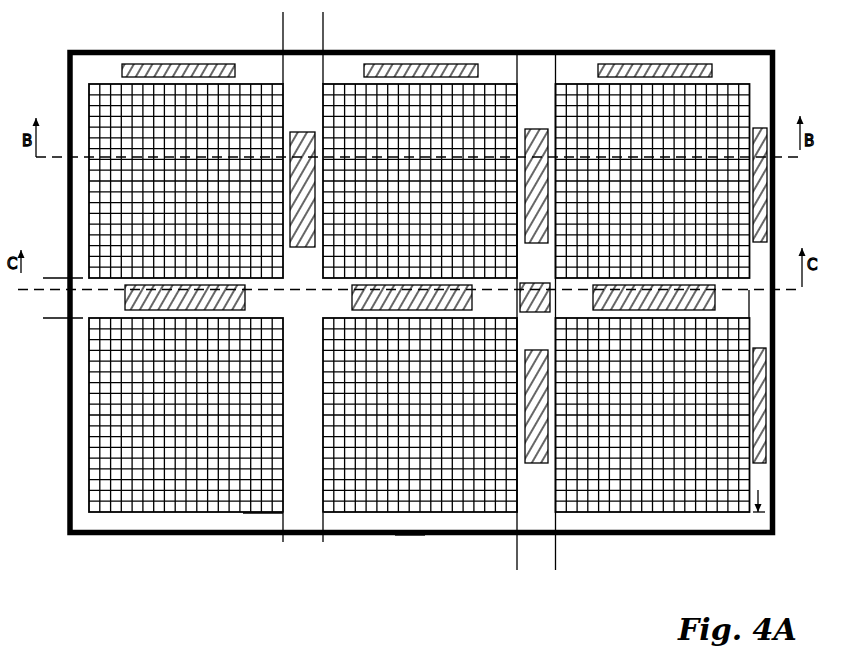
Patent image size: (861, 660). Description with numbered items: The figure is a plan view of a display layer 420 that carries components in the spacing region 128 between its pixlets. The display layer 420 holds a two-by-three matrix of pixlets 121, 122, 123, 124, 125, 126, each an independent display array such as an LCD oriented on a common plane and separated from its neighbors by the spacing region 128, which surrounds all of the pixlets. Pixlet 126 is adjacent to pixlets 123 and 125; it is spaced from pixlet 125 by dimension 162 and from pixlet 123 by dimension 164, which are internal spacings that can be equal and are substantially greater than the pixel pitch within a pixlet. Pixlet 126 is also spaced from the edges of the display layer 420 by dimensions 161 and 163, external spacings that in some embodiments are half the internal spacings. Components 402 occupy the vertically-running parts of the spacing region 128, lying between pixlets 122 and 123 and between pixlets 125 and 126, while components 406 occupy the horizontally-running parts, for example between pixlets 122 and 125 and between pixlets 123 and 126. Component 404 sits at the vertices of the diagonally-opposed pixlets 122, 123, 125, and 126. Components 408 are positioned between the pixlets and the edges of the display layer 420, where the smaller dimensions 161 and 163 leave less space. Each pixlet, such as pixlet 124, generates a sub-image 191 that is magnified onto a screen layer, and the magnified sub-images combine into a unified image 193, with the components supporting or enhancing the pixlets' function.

The pixlet 121 is at (186, 181).
The pixlet 122 is at (420, 181).
The pixlet 123 is at (653, 181).
The pixlet 124 is at (186, 415).
The pixlet 125 is at (420, 415).
The pixlet 126 is at (653, 415).
The spacing region 128 is at (517, 50).
The dimension 161 is at (758, 535).
The dimension 162 is at (347, 30).
The dimension 163 is at (725, 310).
The dimension 164 is at (61, 258).
The sub-image 191 is at (243, 513).
The unified image 193 is at (410, 535).
The component 402 is at (302, 132).
The component 404 is at (520, 310).
The component 406 is at (420, 297).
The component 408 is at (767, 197).
The display layer 420 is at (163, 541).